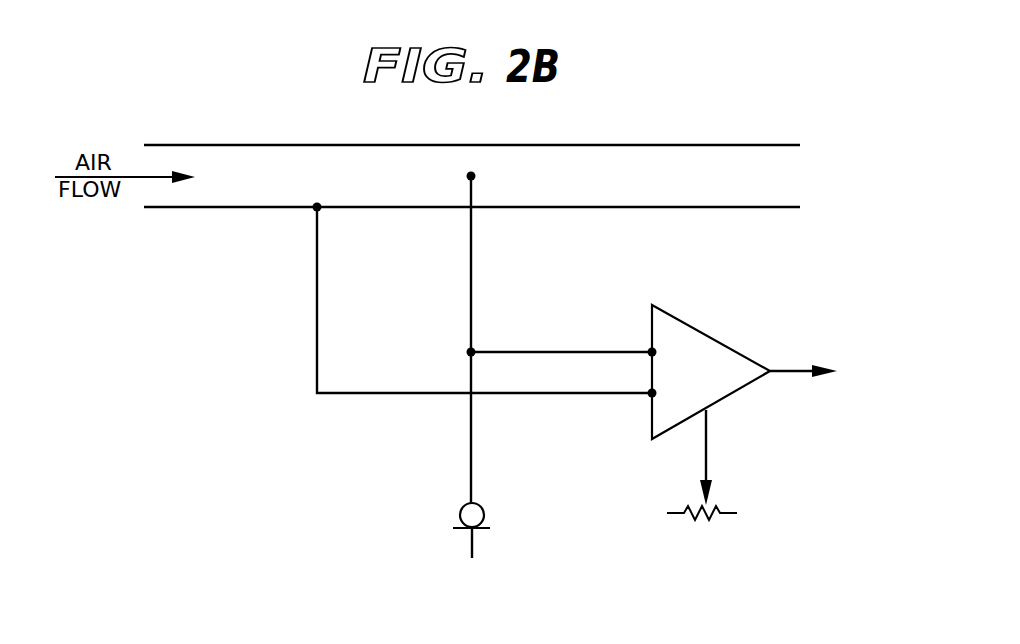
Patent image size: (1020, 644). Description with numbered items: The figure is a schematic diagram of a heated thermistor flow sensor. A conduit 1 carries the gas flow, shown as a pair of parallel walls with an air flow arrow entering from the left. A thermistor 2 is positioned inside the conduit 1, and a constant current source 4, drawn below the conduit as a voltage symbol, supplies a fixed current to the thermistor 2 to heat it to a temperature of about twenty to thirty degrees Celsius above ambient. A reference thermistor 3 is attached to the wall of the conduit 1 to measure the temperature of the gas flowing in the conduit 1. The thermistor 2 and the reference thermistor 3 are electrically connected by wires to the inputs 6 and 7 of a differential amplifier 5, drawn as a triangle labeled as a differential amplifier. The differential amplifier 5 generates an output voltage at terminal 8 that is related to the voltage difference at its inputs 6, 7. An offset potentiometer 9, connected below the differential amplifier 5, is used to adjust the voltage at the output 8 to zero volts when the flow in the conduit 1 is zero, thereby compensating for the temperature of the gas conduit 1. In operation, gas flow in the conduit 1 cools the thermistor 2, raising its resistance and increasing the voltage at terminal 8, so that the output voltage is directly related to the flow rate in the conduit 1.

The conduit 1 is at (572, 145).
The thermistor 2 is at (466, 176).
The reference thermistor 3 is at (312, 212).
The constant current source 4 is at (462, 510).
The differential amplifier 5 is at (700, 330).
The input 6 is at (650, 349).
The input 7 is at (650, 390).
The output terminal 8 is at (813, 372).
The offset potentiometer 9 is at (700, 520).